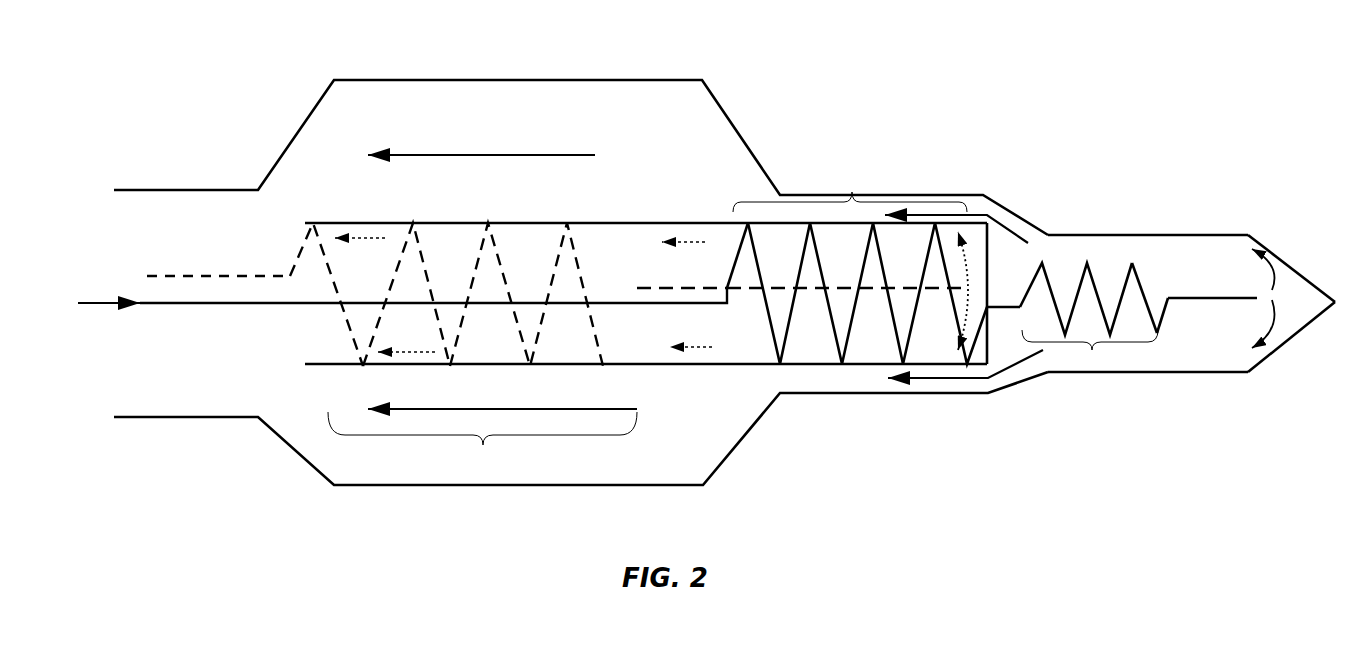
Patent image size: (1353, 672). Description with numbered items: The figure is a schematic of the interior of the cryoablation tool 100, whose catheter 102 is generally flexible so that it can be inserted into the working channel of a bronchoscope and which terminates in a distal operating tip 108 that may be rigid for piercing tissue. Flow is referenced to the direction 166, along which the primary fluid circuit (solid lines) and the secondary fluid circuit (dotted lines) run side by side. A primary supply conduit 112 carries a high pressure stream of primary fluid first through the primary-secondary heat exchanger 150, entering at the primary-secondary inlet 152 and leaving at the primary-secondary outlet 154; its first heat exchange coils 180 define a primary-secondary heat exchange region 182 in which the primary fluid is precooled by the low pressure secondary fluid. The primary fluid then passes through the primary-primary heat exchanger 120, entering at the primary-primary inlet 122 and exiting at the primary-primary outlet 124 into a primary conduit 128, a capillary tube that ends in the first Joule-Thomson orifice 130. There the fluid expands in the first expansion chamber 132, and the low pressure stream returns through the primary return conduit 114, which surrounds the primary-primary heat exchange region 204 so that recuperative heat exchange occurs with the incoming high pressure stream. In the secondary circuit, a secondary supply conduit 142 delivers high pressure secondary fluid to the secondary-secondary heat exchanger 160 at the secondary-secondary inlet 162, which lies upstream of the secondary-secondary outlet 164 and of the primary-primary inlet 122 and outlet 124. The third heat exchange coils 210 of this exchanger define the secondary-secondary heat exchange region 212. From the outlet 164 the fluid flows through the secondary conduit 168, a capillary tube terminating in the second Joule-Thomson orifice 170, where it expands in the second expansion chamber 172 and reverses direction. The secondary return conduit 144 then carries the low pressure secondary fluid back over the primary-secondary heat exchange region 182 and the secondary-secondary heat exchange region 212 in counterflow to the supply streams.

The cryoablation tool 100 is at (830, 122).
The catheter 102 is at (1124, 186).
The distal operating tip 108 is at (1292, 262).
The primary supply conduit 112 is at (178, 305).
The primary return conduit 114 is at (467, 143).
The primary-primary heat exchanger 120 is at (1150, 280).
The primary-primary inlet 122 is at (1017, 300).
The primary-primary outlet 124 is at (1177, 305).
The primary conduit 128 is at (1218, 295).
The first Joule-Thomson orifice 130 is at (1257, 303).
The first expansion chamber 132 is at (1289, 308).
The secondary supply conduit 142 is at (163, 275).
The secondary return conduit 144 is at (670, 367).
The primary-secondary heat exchanger 150 is at (863, 350).
The primary-secondary inlet 152 is at (725, 287).
The primary-secondary outlet 154 is at (988, 310).
The secondary-secondary heat exchanger 160 is at (437, 230).
The secondary-secondary inlet 162 is at (288, 273).
The secondary-secondary outlet 164 is at (630, 287).
The direction 166 is at (108, 305).
The secondary conduit 168 is at (753, 291).
The second Joule-Thomson orifice 170 is at (958, 305).
The second expansion chamber 172 is at (976, 257).
The first heat exchange coils 180 is at (1137, 240).
The primary-secondary heat exchange region 182 is at (795, 200).
The primary-primary heat exchange region 204 is at (1100, 350).
The third heat exchange coils 210 is at (460, 340).
The secondary-secondary heat exchange region 212 is at (483, 445).